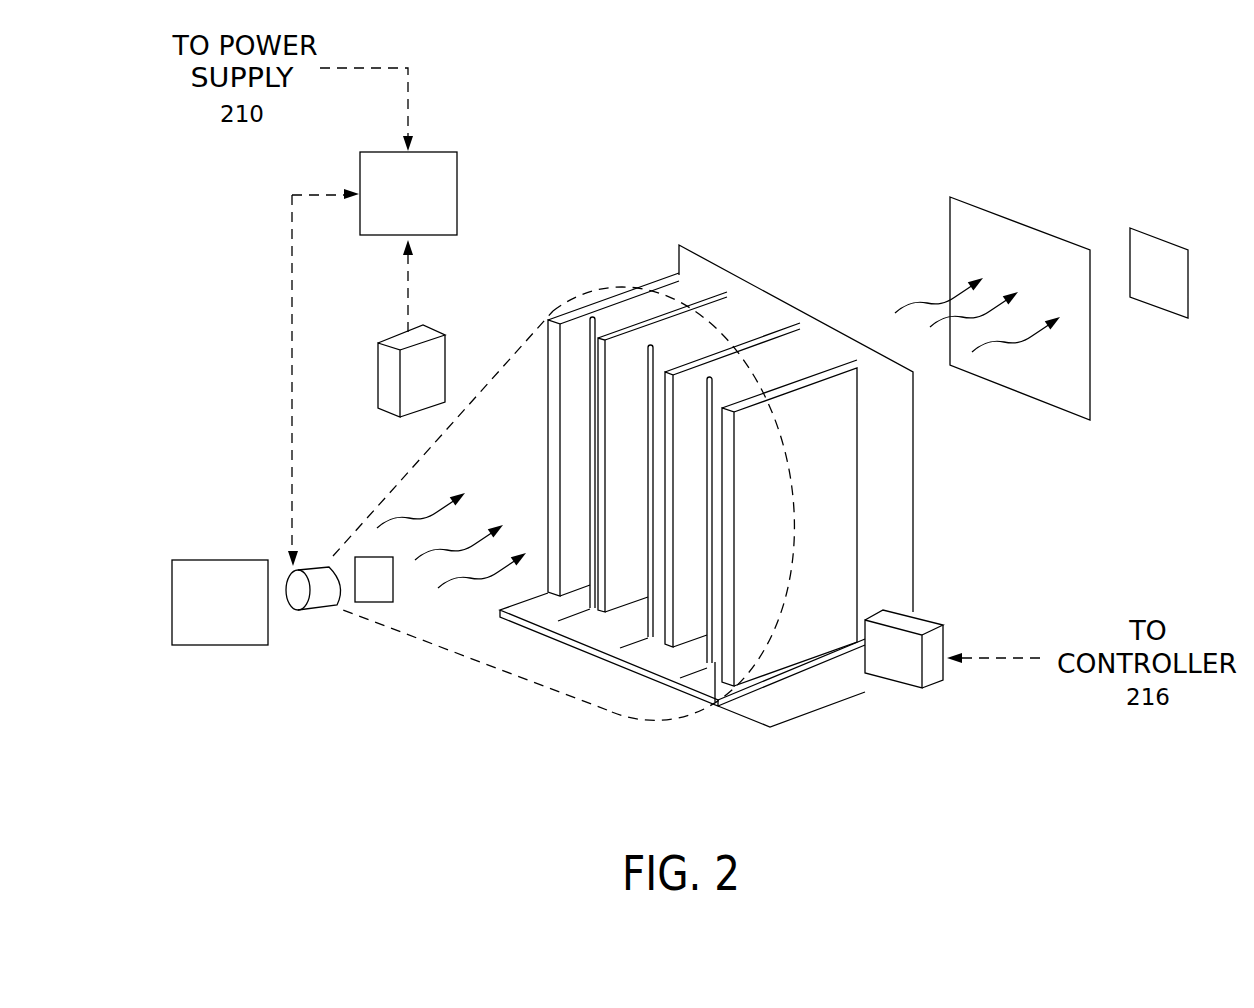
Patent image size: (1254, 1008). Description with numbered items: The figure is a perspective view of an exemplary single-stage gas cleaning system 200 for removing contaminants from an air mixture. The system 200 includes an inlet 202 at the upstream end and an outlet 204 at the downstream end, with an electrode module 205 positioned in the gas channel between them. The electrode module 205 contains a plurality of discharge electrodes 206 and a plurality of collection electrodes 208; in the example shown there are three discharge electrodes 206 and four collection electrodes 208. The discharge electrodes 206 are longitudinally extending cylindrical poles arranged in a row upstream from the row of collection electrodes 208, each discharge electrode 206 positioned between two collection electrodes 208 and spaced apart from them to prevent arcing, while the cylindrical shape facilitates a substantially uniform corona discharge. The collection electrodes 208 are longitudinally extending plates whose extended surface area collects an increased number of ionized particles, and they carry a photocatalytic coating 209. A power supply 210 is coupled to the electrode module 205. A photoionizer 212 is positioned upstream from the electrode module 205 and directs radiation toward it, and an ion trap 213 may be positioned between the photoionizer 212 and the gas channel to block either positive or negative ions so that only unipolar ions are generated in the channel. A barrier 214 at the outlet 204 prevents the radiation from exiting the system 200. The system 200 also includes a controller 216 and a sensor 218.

The gas cleaning system 200 is at (183, 178).
The inlet 202 is at (199, 617).
The outlet 204 is at (1160, 238).
The electrode module 205 is at (592, 676).
The discharge electrodes 206 is at (718, 702).
The collection electrodes 208 is at (859, 402).
The photocatalytic coating 209 is at (880, 501).
The power supply 210 is at (928, 673).
The photoionizer 212 is at (303, 608).
The ion trap 213 is at (377, 602).
The barrier 214 is at (1090, 357).
The controller 216 is at (386, 209).
The sensor 218 is at (380, 343).